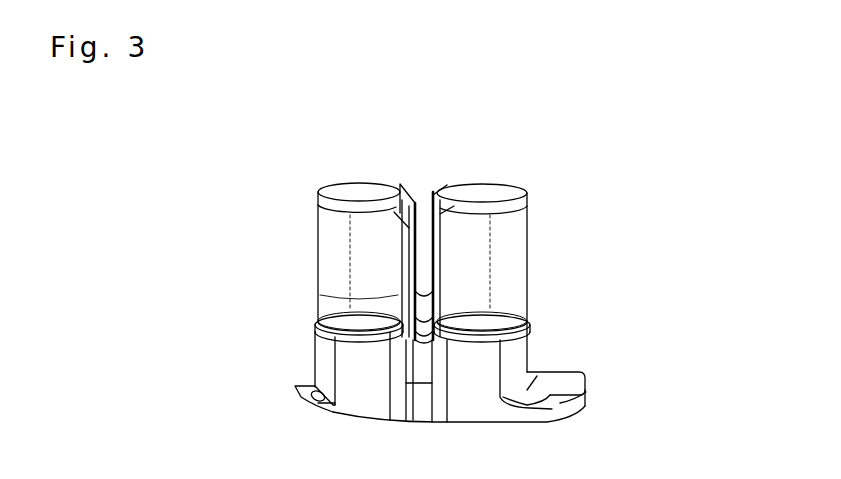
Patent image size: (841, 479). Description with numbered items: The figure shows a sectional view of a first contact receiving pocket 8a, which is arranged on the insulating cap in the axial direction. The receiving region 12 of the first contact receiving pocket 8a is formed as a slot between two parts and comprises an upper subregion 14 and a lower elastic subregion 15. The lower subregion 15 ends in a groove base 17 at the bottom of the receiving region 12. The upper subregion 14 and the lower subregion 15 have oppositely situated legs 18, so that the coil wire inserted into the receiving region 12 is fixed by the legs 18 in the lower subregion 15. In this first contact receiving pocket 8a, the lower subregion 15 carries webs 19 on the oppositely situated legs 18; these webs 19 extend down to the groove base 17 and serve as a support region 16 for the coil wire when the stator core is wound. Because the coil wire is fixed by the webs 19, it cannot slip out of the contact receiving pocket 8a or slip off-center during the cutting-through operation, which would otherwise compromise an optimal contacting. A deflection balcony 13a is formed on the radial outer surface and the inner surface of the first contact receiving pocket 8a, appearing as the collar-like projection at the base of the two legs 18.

The first contact receiving pocket 8a is at (268, 162).
The receiving region 12 is at (423, 268).
The deflection balcony 13a is at (340, 315).
The upper subregion 14 is at (390, 240).
The lower elastic subregion 15 is at (390, 297).
The support region 16 is at (437, 293).
The groove base 17 is at (437, 337).
The legs 18 is at (418, 277).
The webs 19 is at (433, 305).